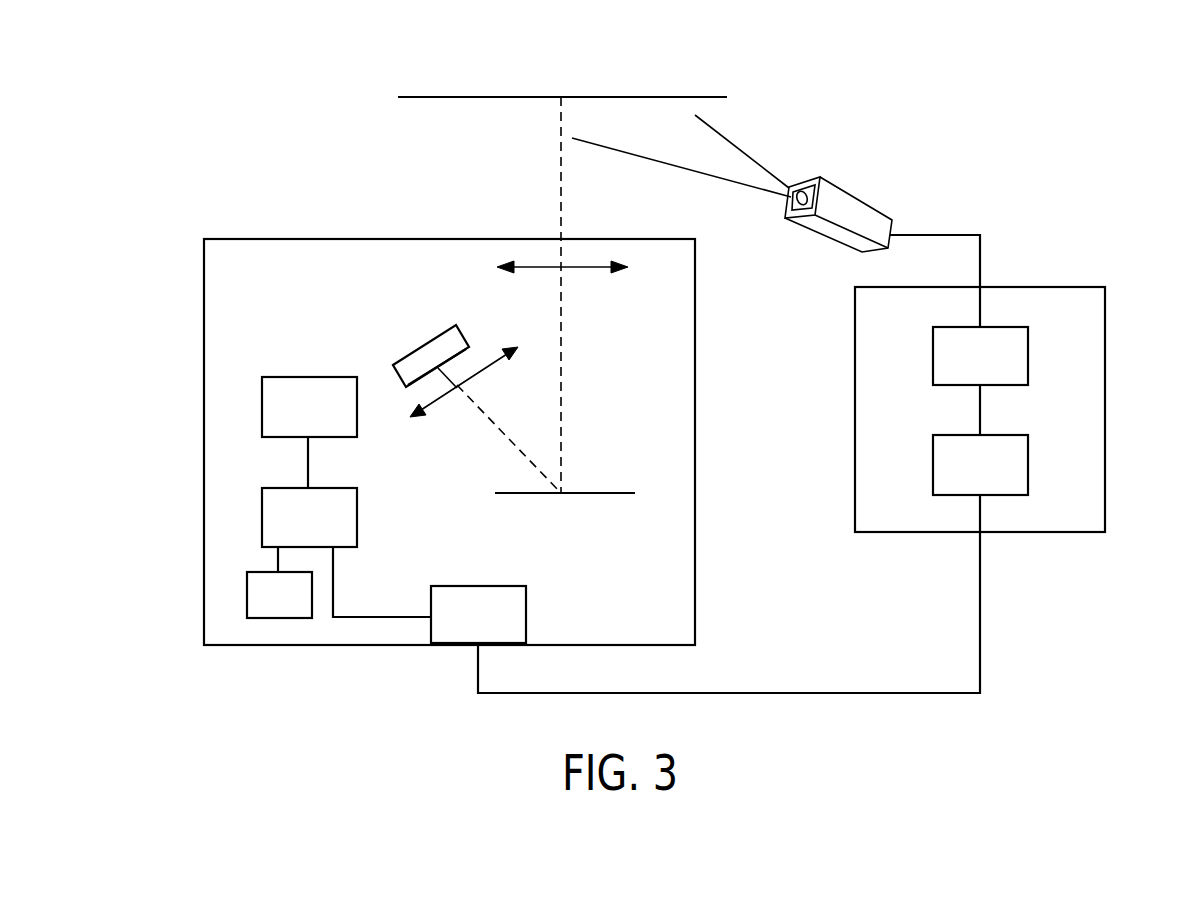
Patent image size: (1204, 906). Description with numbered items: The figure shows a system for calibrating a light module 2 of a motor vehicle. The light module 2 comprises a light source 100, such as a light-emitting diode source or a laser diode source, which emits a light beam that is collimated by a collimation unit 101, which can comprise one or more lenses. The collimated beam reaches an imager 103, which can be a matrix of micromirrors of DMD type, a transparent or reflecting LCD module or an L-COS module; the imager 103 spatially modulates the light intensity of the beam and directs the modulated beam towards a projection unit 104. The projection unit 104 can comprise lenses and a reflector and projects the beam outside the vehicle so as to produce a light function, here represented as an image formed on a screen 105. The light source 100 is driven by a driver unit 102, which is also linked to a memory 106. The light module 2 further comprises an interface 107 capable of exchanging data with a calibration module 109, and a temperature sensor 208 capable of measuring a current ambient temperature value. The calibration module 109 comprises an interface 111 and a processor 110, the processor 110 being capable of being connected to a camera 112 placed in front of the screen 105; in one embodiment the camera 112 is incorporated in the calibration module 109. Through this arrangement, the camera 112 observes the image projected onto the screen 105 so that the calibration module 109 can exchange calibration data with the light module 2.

The light module 2 is at (203, 390).
The light source 100 is at (432, 342).
The collimation unit 101 is at (442, 400).
The driver unit 102 is at (313, 375).
The imager 103 is at (592, 493).
The projection unit 104 is at (548, 265).
The screen 105 is at (655, 95).
The memory 106 is at (360, 528).
The interface 107 is at (527, 627).
The temperature sensor 208 is at (280, 618).
The calibration module 109 is at (1107, 385).
The processor 110 is at (1005, 327).
The interface 111 is at (1003, 495).
The camera 112 is at (860, 200).